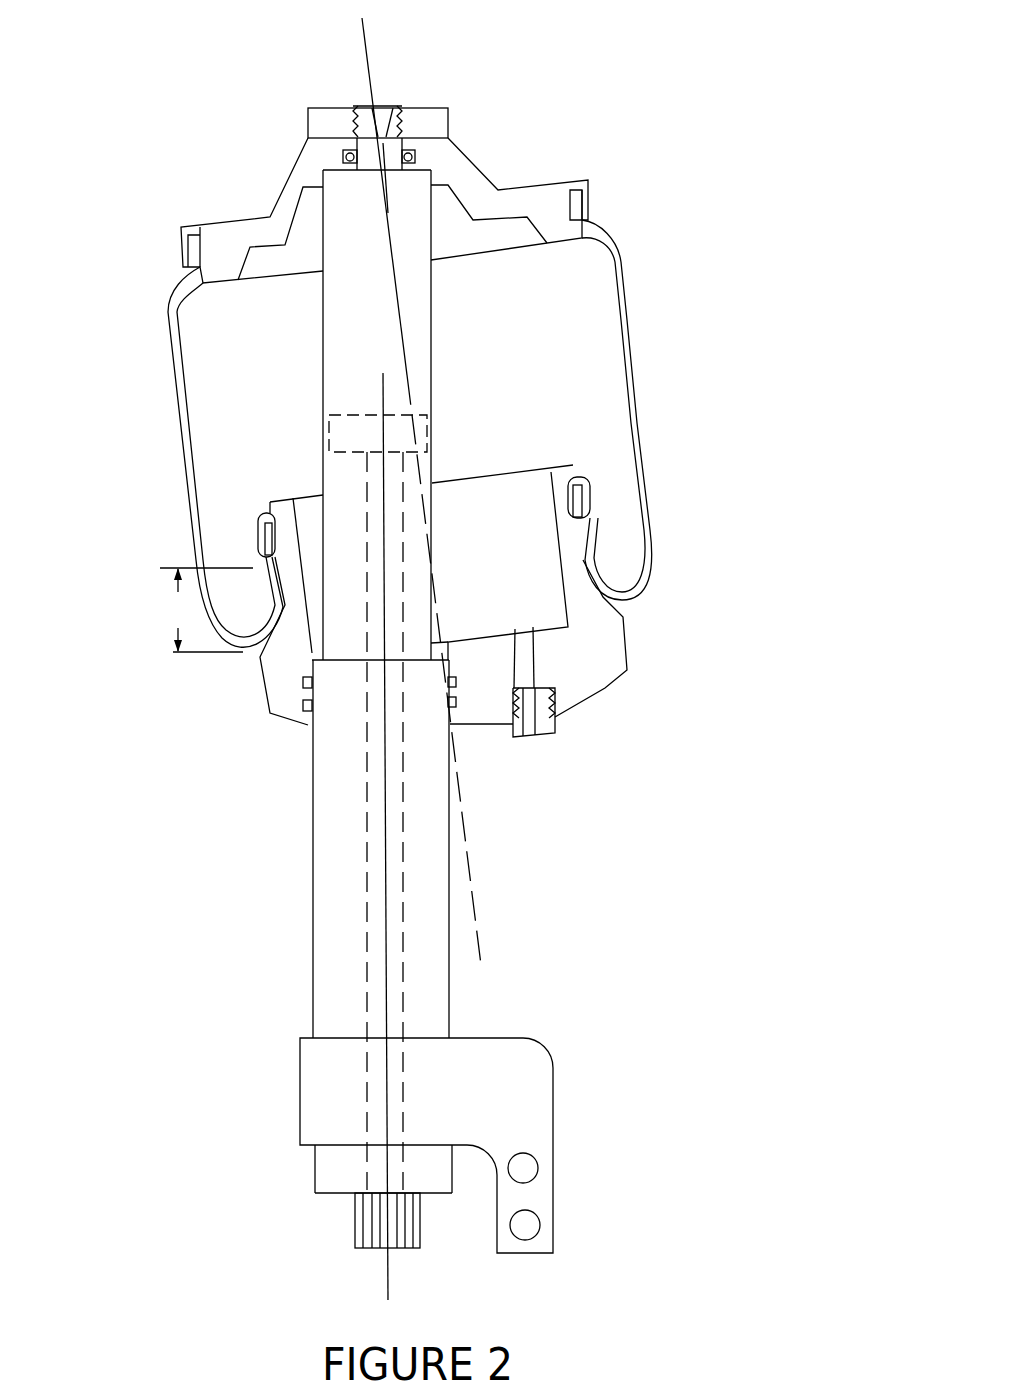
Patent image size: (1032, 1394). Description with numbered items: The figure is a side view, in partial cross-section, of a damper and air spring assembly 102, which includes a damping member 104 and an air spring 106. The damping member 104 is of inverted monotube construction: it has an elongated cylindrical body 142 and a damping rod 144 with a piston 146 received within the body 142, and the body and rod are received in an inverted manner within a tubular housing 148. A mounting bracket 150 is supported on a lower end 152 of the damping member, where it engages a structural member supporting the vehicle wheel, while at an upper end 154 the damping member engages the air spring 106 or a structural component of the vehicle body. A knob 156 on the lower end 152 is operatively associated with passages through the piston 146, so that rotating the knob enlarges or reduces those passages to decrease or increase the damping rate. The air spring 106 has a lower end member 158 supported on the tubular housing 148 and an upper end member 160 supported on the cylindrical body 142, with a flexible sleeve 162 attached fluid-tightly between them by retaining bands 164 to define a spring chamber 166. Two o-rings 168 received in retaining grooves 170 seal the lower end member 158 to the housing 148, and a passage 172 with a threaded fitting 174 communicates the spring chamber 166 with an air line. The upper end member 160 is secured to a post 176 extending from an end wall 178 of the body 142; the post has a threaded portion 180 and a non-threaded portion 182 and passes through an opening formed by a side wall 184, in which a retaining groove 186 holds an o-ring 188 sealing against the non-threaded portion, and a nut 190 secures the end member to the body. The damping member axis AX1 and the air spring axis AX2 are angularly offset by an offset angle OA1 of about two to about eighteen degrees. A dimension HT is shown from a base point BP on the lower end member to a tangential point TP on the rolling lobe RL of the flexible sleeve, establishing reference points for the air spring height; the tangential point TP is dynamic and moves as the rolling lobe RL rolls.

The damper and air spring assembly 102 is at (765, 622).
The damping member 104 is at (512, 874).
The air spring 106 is at (656, 354).
The cylindrical body 142 is at (323, 372).
The damping rod 144 is at (367, 815).
The piston 146 is at (406, 425).
The tubular housing 148 is at (313, 903).
The mounting bracket 150 is at (550, 1070).
The lower end 152 is at (259, 1003).
The upper end 154 is at (498, 271).
The knob 156 is at (355, 1227).
The lower end member 158 is at (256, 682).
The upper end member 160 is at (532, 181).
The flexible sleeve 162 is at (625, 254).
The retaining bands 164 is at (183, 250).
The spring chamber 166 is at (246, 440).
The o-rings 168 is at (304, 685).
The retaining grooves 170 is at (456, 683).
The passage 172 is at (528, 656).
The threaded fitting 174 is at (553, 725).
The post 176 is at (391, 99).
The end wall 178 is at (384, 145).
The threaded portion 180 is at (370, 120).
The non-threaded portion 182 is at (387, 213).
The side wall 184 is at (407, 138).
The retaining groove 186 is at (343, 157).
The o-ring 188 is at (344, 151).
The nut 190 is at (323, 107).
The axis of damping member AX1 is at (387, 1005).
The axis of air spring AX2 is at (402, 322).
The offset angle OA1 is at (390, 957).
The base point BP is at (270, 557).
The dimension HT is at (206, 610).
The tangential point TP is at (249, 648).
The rolling lobe RL is at (648, 597).